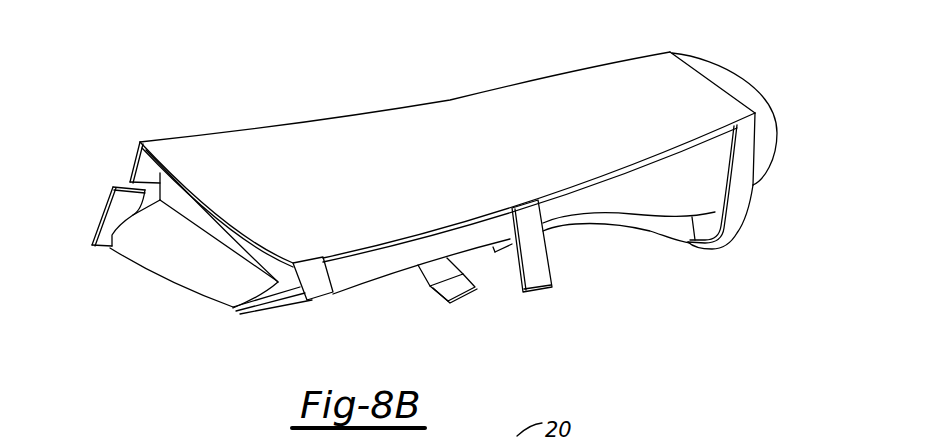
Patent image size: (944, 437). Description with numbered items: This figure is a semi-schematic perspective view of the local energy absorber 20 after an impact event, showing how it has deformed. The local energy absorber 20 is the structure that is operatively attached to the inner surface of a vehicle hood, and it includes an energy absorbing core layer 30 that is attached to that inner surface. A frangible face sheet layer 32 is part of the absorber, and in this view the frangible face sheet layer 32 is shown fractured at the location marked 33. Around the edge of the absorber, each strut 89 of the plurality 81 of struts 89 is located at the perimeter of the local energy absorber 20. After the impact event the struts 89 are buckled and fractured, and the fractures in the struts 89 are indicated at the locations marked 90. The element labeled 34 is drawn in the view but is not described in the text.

The local energy absorber 20 is at (330, 97).
The energy absorbing core layer 30 is at (718, 165).
The frangible face sheet layer 32 is at (667, 240).
The fracture of frangible face sheet layer 33 is at (493, 254).
The rear edge 34 is at (670, 55).
The plurality of struts 81 is at (233, 310).
The strut 89 is at (118, 218).
The fracture in strut 90 is at (128, 184).